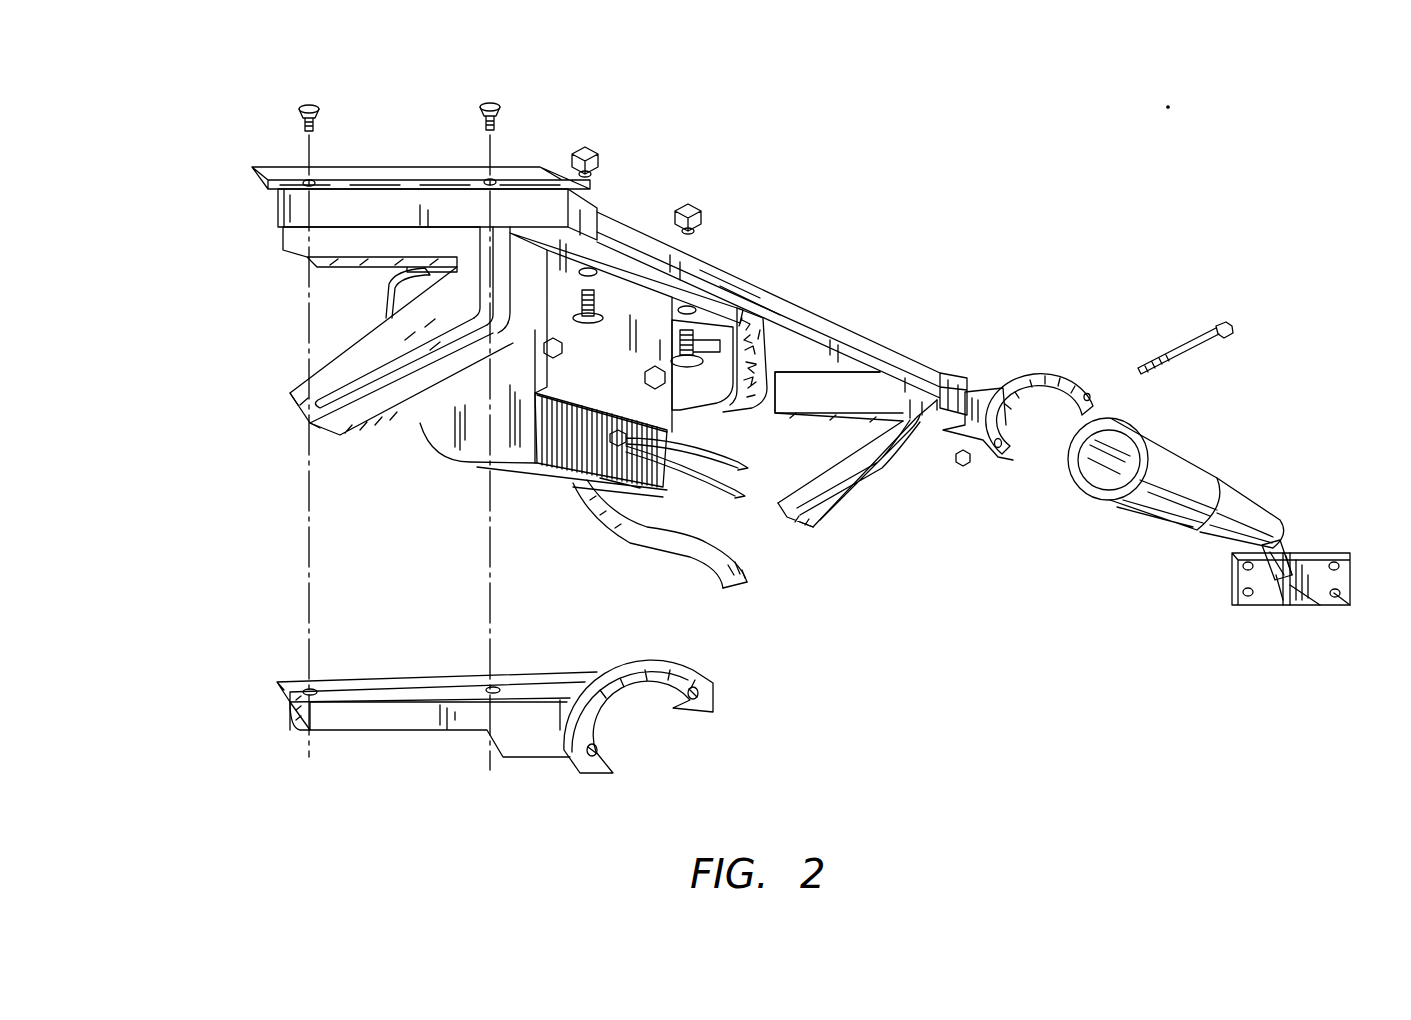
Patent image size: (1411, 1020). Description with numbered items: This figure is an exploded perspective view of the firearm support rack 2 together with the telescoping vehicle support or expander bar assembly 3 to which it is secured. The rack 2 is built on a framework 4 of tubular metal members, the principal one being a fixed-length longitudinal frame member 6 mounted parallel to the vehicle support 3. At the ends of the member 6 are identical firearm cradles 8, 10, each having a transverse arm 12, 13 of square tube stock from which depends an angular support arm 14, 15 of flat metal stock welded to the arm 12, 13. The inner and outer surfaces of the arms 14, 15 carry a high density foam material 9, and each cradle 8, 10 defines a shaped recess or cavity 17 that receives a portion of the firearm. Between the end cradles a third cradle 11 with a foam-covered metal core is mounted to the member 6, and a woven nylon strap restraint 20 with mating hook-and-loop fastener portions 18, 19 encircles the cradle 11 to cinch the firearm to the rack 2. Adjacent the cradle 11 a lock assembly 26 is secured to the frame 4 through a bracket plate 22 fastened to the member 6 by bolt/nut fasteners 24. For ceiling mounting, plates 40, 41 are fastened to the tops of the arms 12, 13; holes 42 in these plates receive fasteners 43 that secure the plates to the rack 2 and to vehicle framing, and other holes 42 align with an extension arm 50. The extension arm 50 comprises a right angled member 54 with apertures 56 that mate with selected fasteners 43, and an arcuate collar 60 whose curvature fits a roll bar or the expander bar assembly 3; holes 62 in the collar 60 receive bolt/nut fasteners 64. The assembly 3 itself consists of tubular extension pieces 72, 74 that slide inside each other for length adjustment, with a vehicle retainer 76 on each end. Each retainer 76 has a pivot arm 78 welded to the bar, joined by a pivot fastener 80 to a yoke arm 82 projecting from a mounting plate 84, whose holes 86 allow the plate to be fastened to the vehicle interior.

The firearm support rack 2 is at (803, 182).
The telescoping vehicle support assembly 3 is at (1225, 482).
The framework 4 is at (610, 214).
The longitudinal frame member 6 is at (838, 333).
The firearm cradle 8 is at (286, 397).
The high density foam material 9 is at (306, 425).
The firearm cradle 10 is at (843, 520).
The third cradle 11 is at (722, 428).
The arm 12 is at (300, 205).
The arm 13 is at (718, 322).
The angular support arm 14 is at (393, 377).
The angular support arm 15 is at (870, 495).
The shaped recess or cavity 17 is at (326, 295).
The mating fastener portion 18 is at (768, 330).
The mating fastener portion 19 is at (718, 575).
The strap restraint 20 is at (620, 537).
The bracket plate 22 is at (568, 380).
The bolt/nut fasteners 24 is at (675, 352).
The lock assembly 26 is at (456, 455).
The plate 40 is at (265, 171).
The plate 41 is at (960, 383).
The holes 42 is at (326, 182).
The fasteners 43 is at (488, 102).
The extension arm 50 is at (302, 742).
The right angled member 54 is at (400, 735).
The apertures 56 is at (290, 710).
The arcuate collar 60 is at (598, 778).
The holes 62 is at (605, 755).
The bolt/nut fasteners 64 is at (1235, 325).
The tubular extension piece 72 is at (1284, 545).
The tubular extension piece 74 is at (1163, 440).
The vehicle retainer 76 is at (1352, 568).
The pivot arm 78 is at (1284, 557).
The pivot fastener 80 is at (1302, 558).
The yoke arm 82 is at (1283, 606).
The mounting plate 84 is at (1300, 607).
The holes 86 is at (1333, 597).